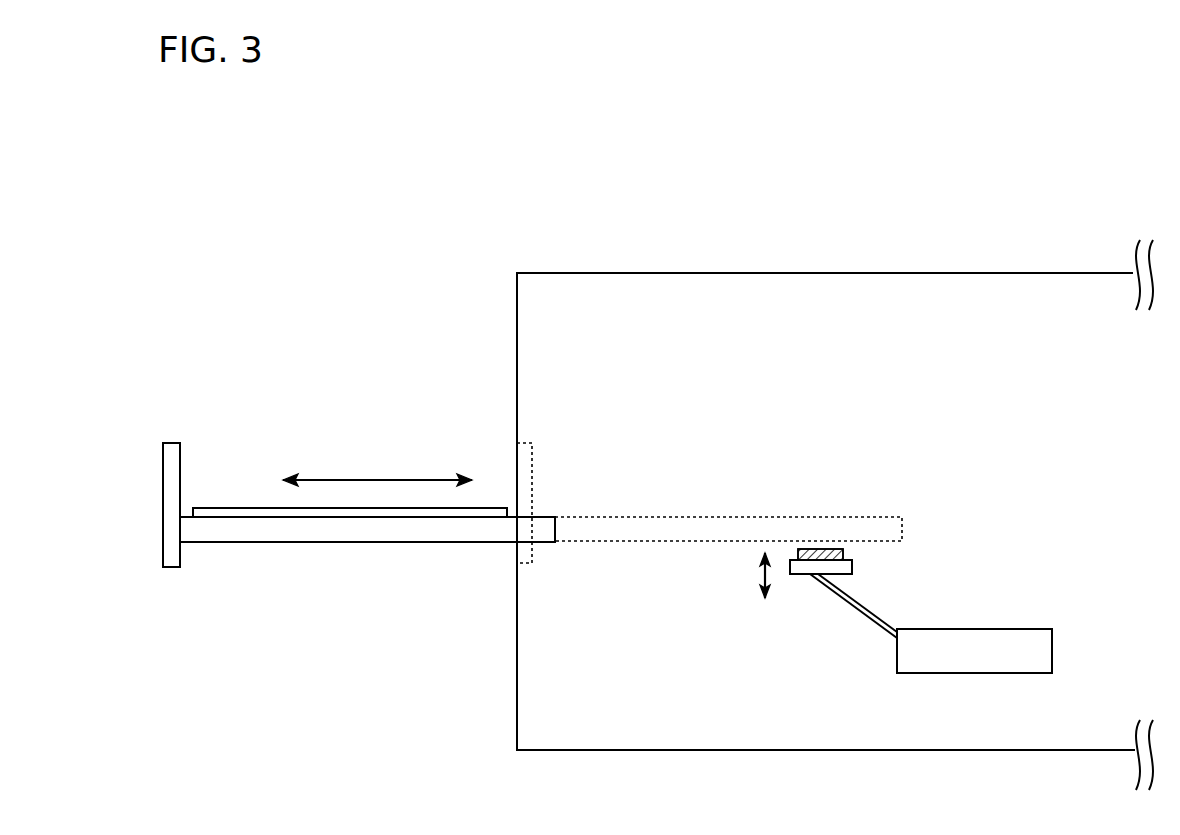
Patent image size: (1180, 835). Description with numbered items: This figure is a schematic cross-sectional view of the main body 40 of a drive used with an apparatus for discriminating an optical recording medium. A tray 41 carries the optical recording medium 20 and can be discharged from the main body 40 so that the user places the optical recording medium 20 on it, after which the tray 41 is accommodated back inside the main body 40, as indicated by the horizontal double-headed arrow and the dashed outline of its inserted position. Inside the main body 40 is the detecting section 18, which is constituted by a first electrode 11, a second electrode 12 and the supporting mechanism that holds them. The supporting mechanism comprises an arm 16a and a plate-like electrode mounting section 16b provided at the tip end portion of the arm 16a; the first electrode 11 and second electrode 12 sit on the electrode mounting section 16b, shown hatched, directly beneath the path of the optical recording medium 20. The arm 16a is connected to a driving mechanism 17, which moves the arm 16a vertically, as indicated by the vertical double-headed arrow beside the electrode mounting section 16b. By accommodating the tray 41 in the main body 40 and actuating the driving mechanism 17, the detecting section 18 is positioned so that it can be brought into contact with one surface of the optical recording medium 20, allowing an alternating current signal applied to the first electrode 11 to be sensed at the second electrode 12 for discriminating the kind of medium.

The main body of the drive 40 is at (681, 273).
The tray 41 is at (163, 498).
The optical recording medium 20 is at (240, 508).
The first electrode 11 is at (843, 552).
The second electrode 12 is at (820, 554).
The arm 16a is at (866, 627).
The electrode mounting section 16b is at (802, 568).
The driving mechanism 17 is at (1052, 633).
The detecting section 18 is at (833, 635).